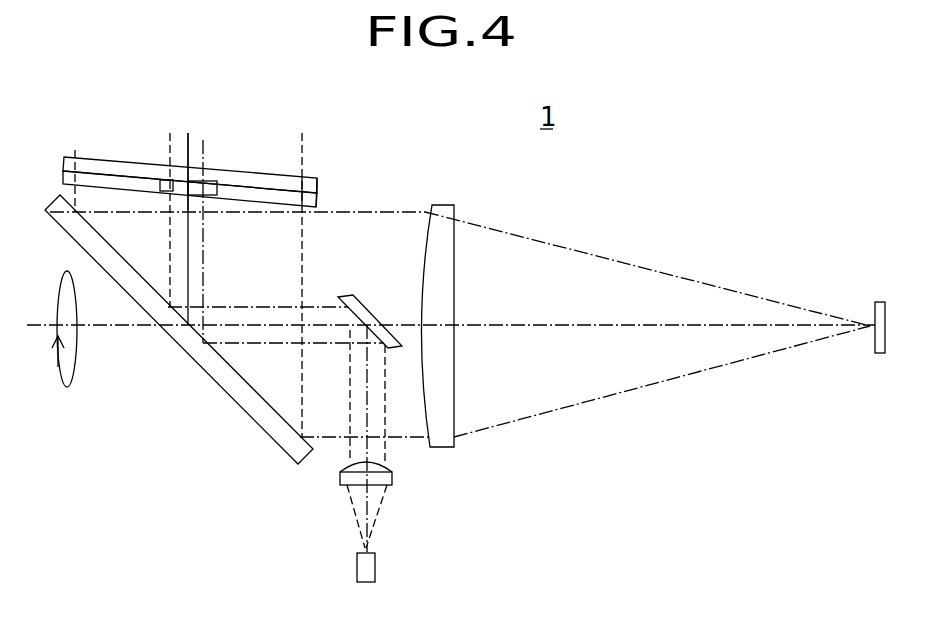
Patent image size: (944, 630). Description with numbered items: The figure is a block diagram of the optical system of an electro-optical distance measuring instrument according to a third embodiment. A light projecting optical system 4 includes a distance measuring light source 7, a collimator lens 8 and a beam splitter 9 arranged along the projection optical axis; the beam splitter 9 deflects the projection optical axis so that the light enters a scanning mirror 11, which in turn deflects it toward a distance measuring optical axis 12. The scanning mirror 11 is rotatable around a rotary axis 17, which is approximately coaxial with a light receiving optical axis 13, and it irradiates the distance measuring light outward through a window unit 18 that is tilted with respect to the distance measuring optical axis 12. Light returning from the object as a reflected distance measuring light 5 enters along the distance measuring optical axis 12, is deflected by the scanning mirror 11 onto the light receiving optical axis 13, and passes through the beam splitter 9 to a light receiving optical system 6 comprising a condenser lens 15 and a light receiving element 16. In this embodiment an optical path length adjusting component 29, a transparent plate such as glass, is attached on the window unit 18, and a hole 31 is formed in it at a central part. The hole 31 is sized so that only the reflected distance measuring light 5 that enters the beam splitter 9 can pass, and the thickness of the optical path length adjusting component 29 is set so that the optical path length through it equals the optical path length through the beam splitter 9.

The light projecting optical system 4 is at (318, 535).
The reflected distance measuring light 5 is at (627, 263).
The light receiving optical system 6 is at (473, 453).
The distance measuring light source 7 is at (376, 568).
The collimator lens 8 is at (340, 478).
The beam splitter 9 is at (367, 307).
The scanning mirror 11 is at (200, 370).
The distance measuring optical axis 12 is at (187, 148).
The light receiving optical axis 13 is at (508, 323).
The condenser lens 15 is at (443, 203).
The light receiving element 16 is at (880, 302).
The rotary axis 17 is at (30, 325).
The window unit 18 is at (250, 177).
The optical path length adjusting component 29 is at (308, 205).
The hole 31 is at (212, 195).